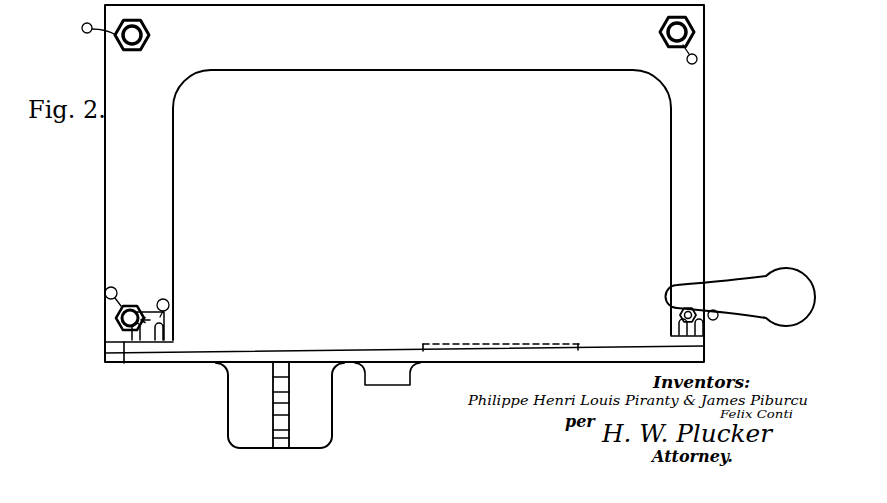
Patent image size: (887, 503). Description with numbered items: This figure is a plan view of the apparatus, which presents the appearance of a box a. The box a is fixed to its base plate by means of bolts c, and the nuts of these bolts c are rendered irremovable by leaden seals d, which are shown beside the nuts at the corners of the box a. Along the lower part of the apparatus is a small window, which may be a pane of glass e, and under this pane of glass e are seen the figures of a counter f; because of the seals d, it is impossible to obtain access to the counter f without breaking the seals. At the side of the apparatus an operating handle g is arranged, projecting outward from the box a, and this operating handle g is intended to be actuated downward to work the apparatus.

The box a is at (422, 205).
The bolts c is at (151, 36).
The leaden seals d is at (83, 31).
The pane of glass e is at (278, 407).
The counter f is at (333, 411).
The operating handle g is at (741, 297).